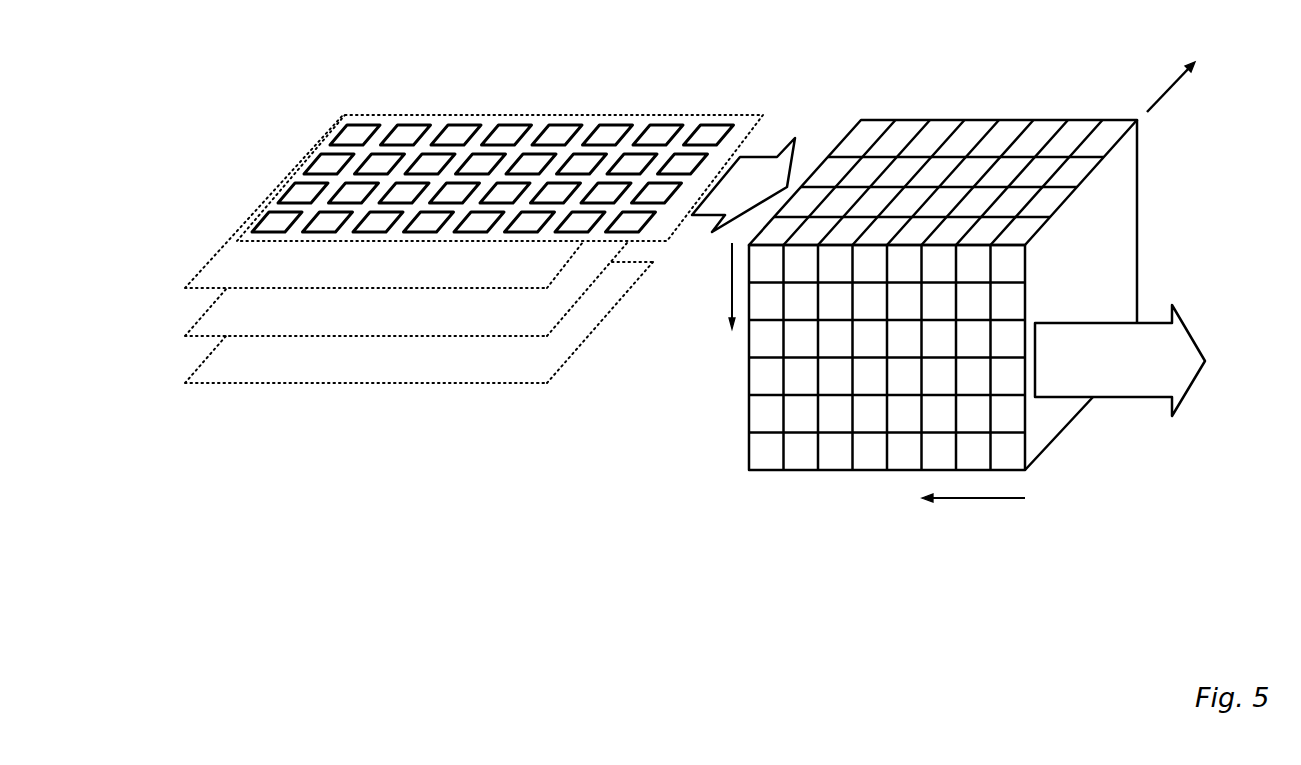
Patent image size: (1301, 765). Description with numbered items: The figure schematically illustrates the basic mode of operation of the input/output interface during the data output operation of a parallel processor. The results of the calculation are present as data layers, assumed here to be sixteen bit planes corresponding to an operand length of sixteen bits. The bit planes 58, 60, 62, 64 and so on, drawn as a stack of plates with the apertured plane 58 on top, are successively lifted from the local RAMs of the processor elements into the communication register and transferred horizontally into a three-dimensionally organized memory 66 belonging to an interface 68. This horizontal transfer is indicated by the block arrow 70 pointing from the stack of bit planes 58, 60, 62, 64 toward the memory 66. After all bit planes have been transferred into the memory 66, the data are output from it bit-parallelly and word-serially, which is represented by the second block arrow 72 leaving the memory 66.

The bit plane 58 is at (620, 115).
The bit plane 60 is at (212, 272).
The bit plane 62 is at (223, 318).
The bit plane 64 is at (243, 365).
The three-dimensionally organized memory 66 is at (747, 403).
The interface 68 is at (803, 481).
The arrow 70 is at (757, 170).
The arrow 72 is at (1115, 373).